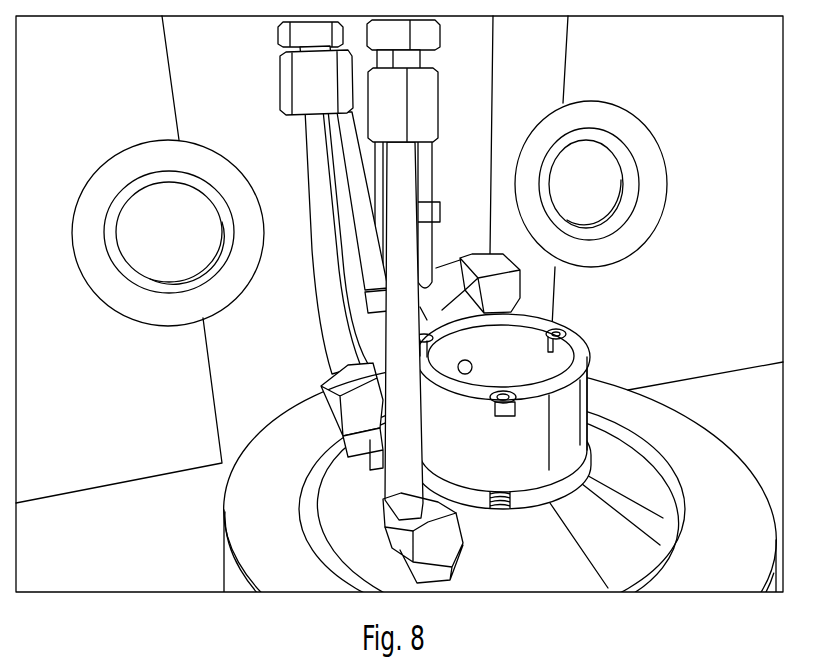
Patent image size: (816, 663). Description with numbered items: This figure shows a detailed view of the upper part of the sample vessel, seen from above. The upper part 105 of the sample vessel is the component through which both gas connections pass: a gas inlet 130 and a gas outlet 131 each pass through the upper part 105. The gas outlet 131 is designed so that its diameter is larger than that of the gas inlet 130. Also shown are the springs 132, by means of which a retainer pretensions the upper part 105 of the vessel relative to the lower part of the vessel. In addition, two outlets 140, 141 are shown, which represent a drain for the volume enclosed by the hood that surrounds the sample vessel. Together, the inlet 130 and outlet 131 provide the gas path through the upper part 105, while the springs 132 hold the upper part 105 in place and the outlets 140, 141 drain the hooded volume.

The upper part of the sample vessel 105 is at (247, 538).
The gas inlet 130 is at (433, 547).
The gas outlet 131 is at (337, 413).
The springs 132 is at (500, 506).
The outlet 140 is at (140, 257).
The outlet 141 is at (605, 178).